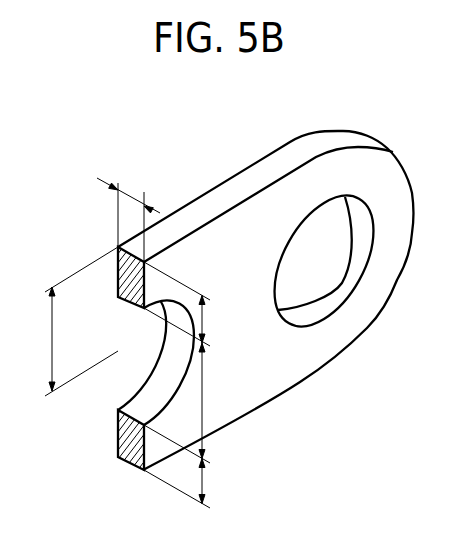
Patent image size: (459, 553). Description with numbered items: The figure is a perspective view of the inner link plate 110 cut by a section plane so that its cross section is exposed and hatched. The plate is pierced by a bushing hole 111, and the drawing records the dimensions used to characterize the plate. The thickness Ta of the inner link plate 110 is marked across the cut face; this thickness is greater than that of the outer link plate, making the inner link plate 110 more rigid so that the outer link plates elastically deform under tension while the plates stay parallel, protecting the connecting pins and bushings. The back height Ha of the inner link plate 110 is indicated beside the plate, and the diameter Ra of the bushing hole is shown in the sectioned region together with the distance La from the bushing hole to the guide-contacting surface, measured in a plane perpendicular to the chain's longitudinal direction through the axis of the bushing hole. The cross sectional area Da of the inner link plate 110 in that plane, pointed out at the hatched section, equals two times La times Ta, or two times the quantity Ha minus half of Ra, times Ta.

The inner link plate 110 is at (340, 168).
The through hole 111 is at (348, 268).
The thickness of inner link plate Ta is at (128, 215).
The back height of inner link plate Ha is at (70, 321).
The distance from the bushing hole to the guide-contacting surface La is at (190, 385).
The diameter of bushing hole Ra is at (215, 401).
The cross sectional area of inner link plate Da is at (132, 302).